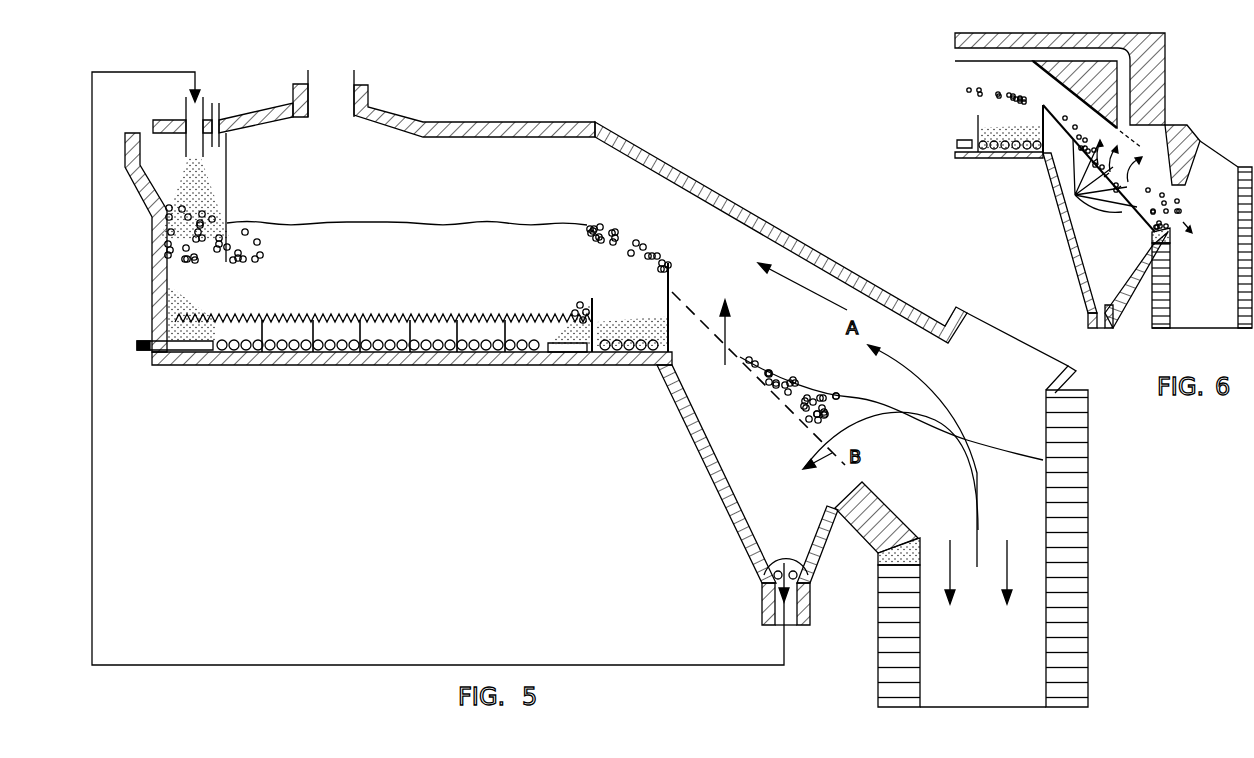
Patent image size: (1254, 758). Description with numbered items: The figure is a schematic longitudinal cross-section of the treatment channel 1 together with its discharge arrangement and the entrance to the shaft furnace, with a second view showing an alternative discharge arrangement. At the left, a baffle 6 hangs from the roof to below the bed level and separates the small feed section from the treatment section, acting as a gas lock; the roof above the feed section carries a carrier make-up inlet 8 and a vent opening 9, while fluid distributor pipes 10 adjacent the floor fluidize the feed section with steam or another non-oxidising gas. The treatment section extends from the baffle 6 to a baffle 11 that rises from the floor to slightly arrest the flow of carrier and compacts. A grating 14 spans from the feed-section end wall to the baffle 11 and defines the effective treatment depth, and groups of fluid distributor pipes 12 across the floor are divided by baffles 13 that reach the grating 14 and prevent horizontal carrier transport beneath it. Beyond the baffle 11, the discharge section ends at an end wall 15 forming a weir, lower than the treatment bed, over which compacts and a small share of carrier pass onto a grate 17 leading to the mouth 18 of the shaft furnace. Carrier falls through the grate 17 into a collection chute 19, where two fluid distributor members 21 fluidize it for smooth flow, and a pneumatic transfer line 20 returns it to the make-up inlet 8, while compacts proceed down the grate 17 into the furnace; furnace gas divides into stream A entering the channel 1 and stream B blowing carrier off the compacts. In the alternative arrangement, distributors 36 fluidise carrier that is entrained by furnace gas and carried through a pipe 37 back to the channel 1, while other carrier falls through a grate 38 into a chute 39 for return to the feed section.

In FIG. 5, the treatment channel 1 is at (160, 289).
In FIG. 5, the baffle 6 is at (227, 192).
In FIG. 5, the carrier make-up inlet 8 is at (186, 107).
In FIG. 5, the vent opening 9 is at (220, 111).
In FIG. 5, the fluid distributor pipes 10 is at (207, 351).
In FIG. 5, the baffle 11 is at (593, 310).
In FIG. 5, the fluid distributor pipes 12 is at (313, 353).
In FIG. 5, the baffles 13 is at (457, 333).
In FIG. 5, the grating 14 is at (513, 322).
In FIG. 5, the end wall 15 is at (672, 280).
In FIG. 5, the grate 17 is at (702, 318).
In FIG. 5, the mouth 18 is at (903, 513).
In FIG. 5, the collection chute 19 is at (710, 478).
In FIG. 5, the pneumatic transfer line 20 is at (743, 665).
In FIG. 5, the fluid distributor members 21 is at (757, 546).
In FIG. 6, the distributors 36 is at (1104, 180).
In FIG. 6, the pipe 37 is at (1167, 82).
In FIG. 6, the grate 38 is at (1142, 162).
In FIG. 6, the chute 39 is at (1073, 275).